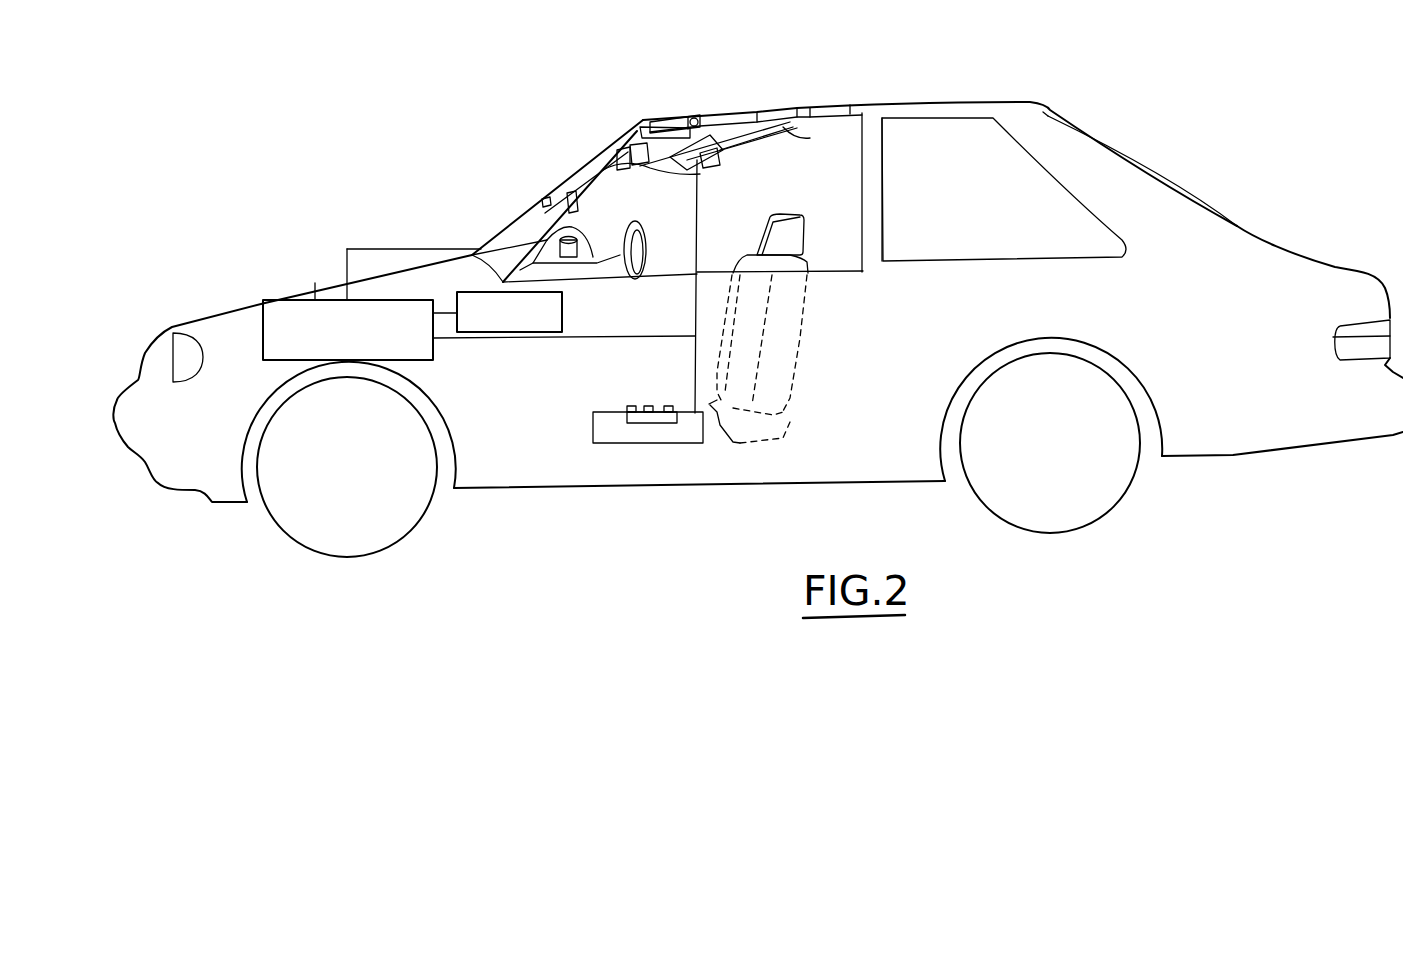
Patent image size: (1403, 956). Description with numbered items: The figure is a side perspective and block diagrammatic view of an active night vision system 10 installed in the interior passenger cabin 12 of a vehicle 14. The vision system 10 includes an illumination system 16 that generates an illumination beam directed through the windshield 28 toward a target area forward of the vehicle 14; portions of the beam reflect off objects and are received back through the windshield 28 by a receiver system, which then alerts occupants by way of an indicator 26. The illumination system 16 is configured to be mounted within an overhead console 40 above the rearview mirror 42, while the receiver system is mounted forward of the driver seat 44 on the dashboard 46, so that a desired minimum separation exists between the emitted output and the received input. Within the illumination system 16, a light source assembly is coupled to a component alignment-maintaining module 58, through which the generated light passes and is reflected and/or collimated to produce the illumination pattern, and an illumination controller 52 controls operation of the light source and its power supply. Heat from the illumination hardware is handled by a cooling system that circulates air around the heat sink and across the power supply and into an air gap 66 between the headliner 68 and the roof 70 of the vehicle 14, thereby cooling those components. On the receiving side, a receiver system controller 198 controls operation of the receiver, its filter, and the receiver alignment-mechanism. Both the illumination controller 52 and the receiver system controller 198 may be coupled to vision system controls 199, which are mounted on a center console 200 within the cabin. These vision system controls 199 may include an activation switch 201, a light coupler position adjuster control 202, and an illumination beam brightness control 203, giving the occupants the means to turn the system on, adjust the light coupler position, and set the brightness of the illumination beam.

The active night vision system 10 is at (584, 86).
The interior passenger cabin 12 is at (803, 468).
The vehicle 14 is at (930, 102).
The illumination system 16 is at (766, 143).
The indicator 26 is at (566, 316).
The windshield 28 is at (532, 205).
The overhead console 40 is at (814, 141).
The rearview mirror 42 is at (580, 202).
The driver seat 44 is at (803, 260).
The dashboard 46 is at (531, 209).
The illumination controller 52 is at (720, 165).
The component alignment-maintaining module 58 is at (630, 122).
The air gap 66 is at (964, 110).
The headliner 68 is at (927, 118).
The roof 70 is at (825, 105).
The receiver system controller 198 is at (315, 283).
The vision system controls 199 is at (647, 427).
The center console 200 is at (593, 430).
The activation switch 201 is at (627, 407).
The light coupler position adjuster control 202 is at (647, 406).
The illumination beam brightness control 203 is at (670, 406).